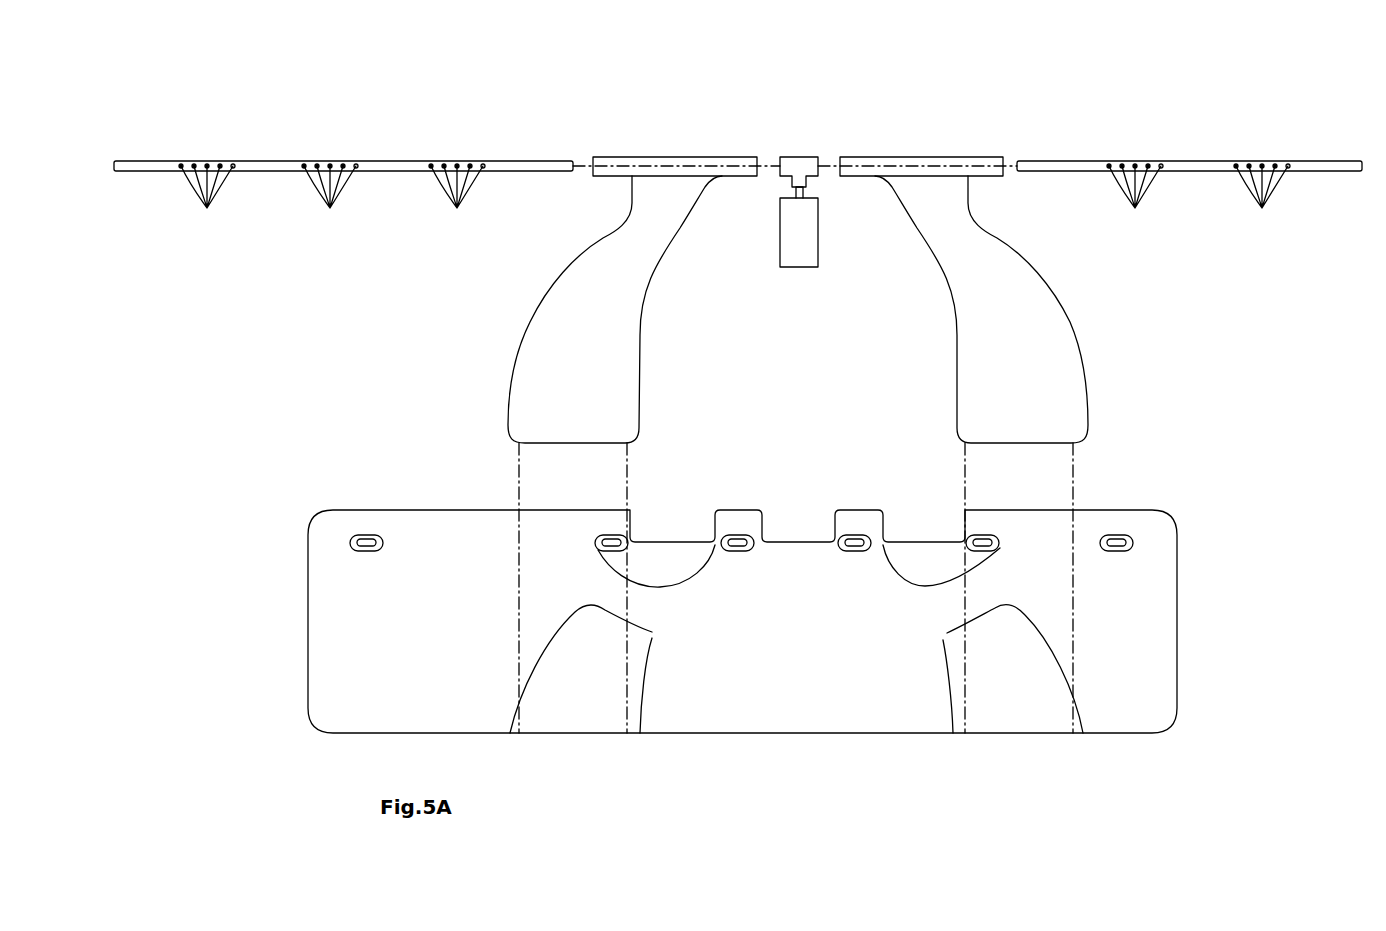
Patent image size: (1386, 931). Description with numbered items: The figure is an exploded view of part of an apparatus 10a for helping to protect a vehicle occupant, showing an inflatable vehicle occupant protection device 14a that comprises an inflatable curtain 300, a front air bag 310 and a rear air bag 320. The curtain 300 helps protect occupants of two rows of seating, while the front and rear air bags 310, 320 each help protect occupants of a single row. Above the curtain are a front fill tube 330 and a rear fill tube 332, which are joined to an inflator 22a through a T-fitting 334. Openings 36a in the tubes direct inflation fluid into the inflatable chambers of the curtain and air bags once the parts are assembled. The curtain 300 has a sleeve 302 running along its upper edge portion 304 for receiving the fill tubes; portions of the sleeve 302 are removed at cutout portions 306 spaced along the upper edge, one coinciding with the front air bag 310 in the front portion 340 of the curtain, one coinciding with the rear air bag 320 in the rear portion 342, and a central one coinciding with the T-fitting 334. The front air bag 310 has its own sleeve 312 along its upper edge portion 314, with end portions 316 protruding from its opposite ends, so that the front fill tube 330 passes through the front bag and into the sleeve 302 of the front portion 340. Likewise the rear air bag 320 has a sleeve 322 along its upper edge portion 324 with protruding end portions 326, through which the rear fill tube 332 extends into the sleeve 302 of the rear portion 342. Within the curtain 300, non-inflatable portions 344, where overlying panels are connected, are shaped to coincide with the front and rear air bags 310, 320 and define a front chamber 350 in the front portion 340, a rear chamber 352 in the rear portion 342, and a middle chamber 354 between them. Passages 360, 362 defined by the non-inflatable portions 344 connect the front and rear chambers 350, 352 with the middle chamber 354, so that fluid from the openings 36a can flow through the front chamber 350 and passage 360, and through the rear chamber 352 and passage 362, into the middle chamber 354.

The apparatus 10a is at (383, 95).
The inflatable vehicle occupant protection device 14a is at (477, 73).
The inflator 22a is at (797, 240).
The openings 36a is at (734, 199).
The inflatable curtain 300 is at (757, 695).
The sleeve 302 is at (605, 522).
The upper edge portion 304 is at (472, 510).
The cutout portions 306 is at (677, 523).
The front air bag 310 is at (550, 373).
The sleeve 312 is at (730, 158).
The upper edge portion 314 is at (667, 157).
The end portions 316 is at (607, 158).
The rear air bag 320 is at (992, 378).
The sleeve 322 is at (973, 158).
The upper edge portion 324 is at (920, 156).
The end portions 326 is at (852, 158).
The front fill tube 330 is at (260, 163).
The rear fill tube 332 is at (1190, 163).
The T-fitting 334 is at (802, 160).
The front portion 340 is at (415, 545).
The rear portion 342 is at (1137, 600).
The non-inflatable portions 344 is at (667, 570).
The front chamber 350 is at (360, 640).
The rear chamber 352 is at (1132, 662).
The middle chamber 354 is at (797, 667).
The passage 360 is at (615, 593).
The passage 362 is at (973, 595).